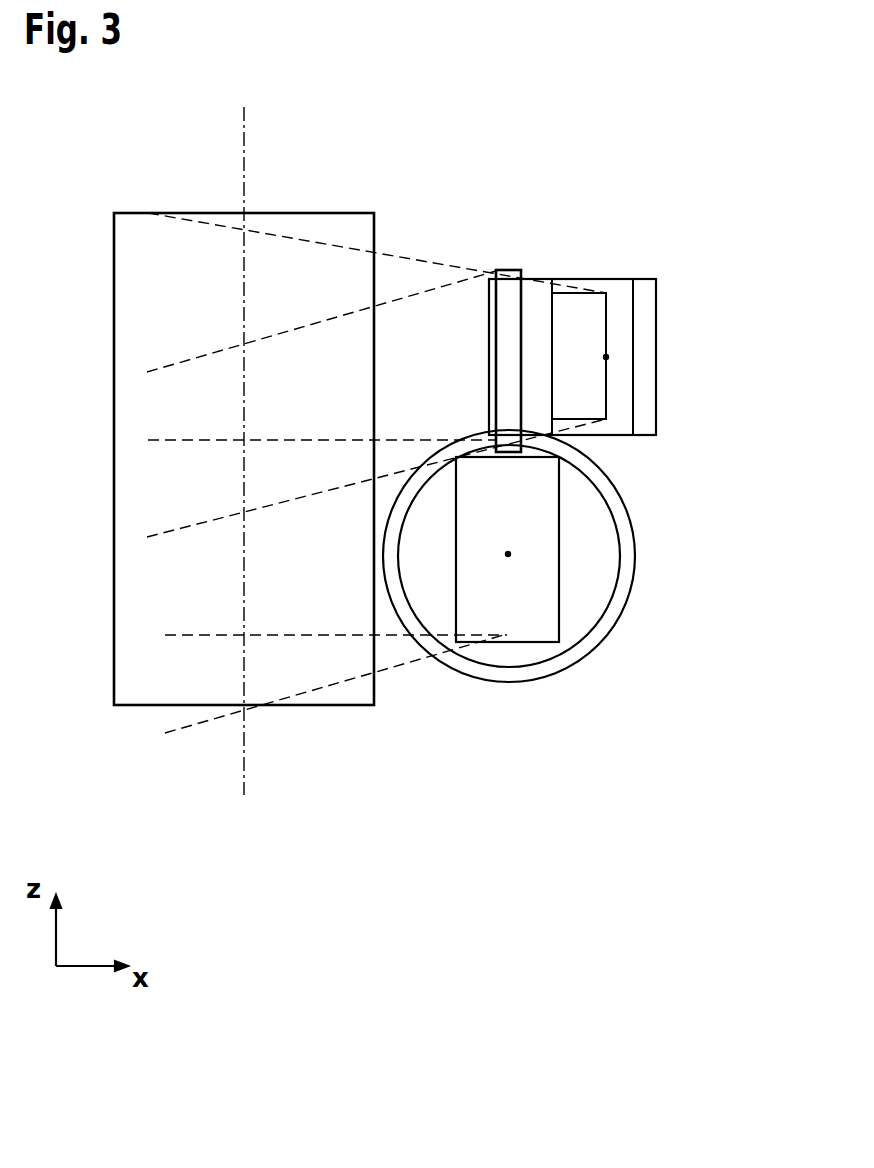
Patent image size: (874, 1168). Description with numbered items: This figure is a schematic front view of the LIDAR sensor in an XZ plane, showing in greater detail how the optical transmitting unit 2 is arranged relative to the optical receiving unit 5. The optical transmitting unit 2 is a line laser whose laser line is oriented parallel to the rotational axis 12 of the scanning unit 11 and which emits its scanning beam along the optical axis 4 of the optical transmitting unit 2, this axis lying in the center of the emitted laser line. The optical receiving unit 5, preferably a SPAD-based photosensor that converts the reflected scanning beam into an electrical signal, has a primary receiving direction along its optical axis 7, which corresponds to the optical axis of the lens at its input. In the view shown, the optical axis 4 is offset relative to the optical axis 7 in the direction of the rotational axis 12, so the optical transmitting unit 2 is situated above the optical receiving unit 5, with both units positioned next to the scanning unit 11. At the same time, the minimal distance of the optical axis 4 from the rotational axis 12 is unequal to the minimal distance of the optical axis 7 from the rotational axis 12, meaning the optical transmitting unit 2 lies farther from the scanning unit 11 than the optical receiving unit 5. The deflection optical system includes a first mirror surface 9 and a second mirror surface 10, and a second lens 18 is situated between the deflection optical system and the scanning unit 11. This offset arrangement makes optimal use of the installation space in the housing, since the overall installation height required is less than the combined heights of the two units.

The optical transmitting unit 2 is at (657, 297).
The optical axis of optical transmitting unit 4 is at (606, 357).
The optical receiving unit 5 is at (628, 598).
The optical axis of optical receiving unit 7 is at (508, 554).
The first mirror surface 9 is at (607, 437).
The second mirror surface 10 is at (518, 643).
The scanning unit 11 is at (137, 737).
The rotational axis of scanning unit 12 is at (244, 138).
The second lens 18 is at (503, 270).